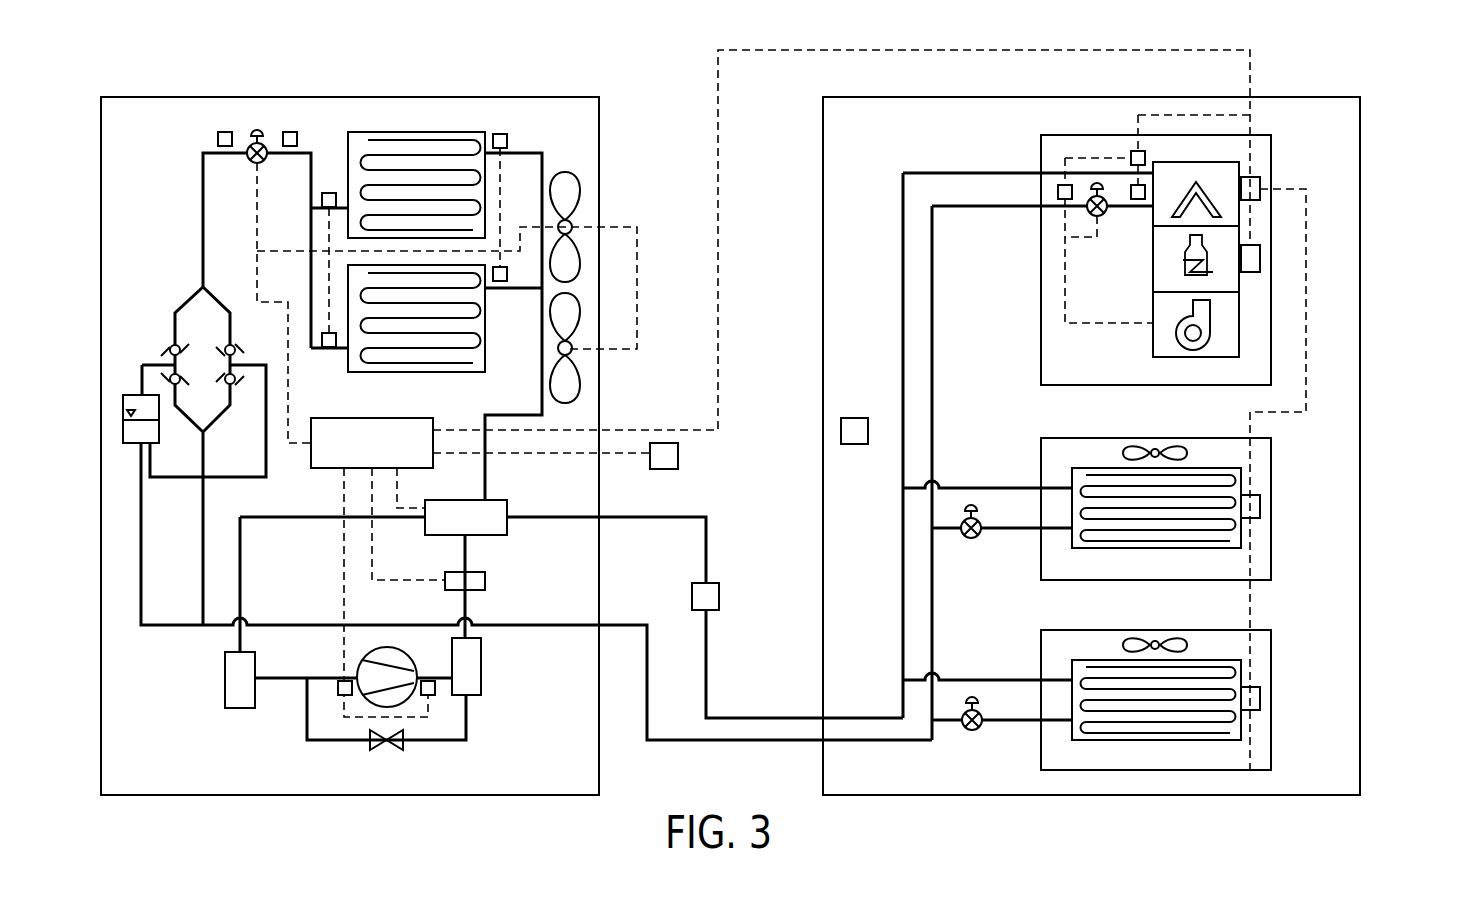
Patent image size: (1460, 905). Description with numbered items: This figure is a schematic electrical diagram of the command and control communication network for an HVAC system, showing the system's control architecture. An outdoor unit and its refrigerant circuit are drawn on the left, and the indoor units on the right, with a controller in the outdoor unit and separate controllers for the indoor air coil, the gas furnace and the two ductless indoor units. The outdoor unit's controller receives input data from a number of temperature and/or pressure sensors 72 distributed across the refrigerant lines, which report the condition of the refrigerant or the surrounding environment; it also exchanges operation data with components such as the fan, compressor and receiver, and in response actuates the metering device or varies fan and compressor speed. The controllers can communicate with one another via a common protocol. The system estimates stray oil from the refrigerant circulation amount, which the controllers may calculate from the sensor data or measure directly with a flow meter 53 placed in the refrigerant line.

The temperature and/or pressure sensors 72 is at (329, 193).
The flow meter 53 is at (485, 580).